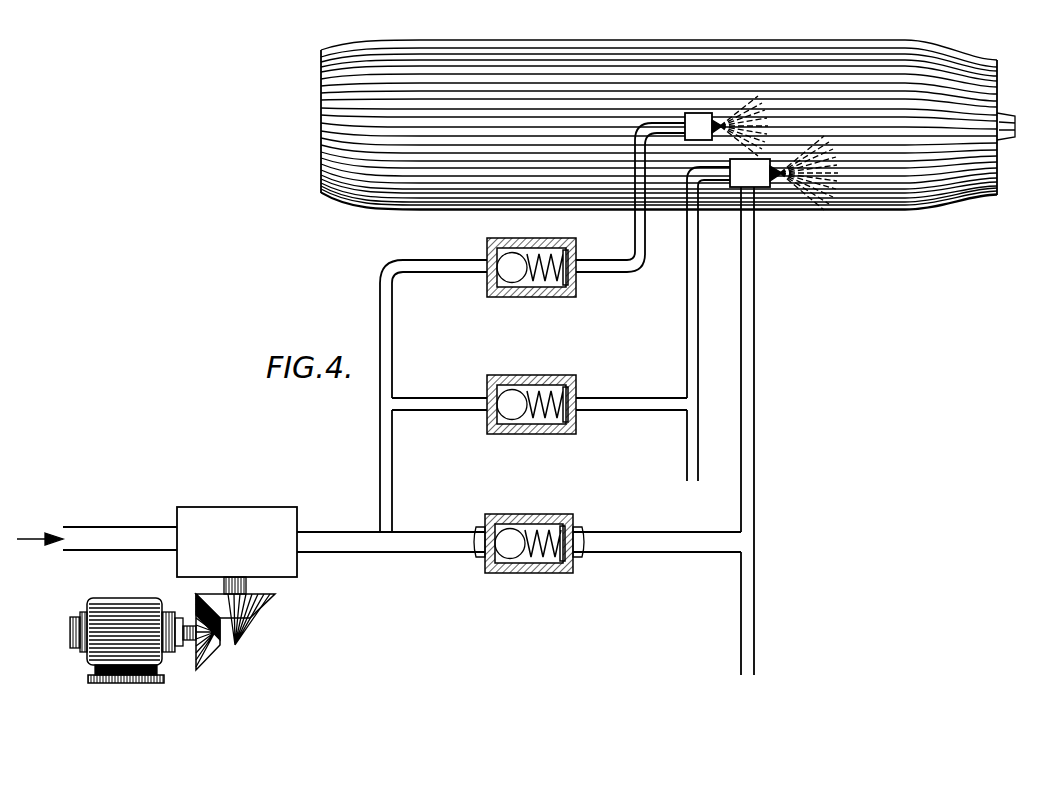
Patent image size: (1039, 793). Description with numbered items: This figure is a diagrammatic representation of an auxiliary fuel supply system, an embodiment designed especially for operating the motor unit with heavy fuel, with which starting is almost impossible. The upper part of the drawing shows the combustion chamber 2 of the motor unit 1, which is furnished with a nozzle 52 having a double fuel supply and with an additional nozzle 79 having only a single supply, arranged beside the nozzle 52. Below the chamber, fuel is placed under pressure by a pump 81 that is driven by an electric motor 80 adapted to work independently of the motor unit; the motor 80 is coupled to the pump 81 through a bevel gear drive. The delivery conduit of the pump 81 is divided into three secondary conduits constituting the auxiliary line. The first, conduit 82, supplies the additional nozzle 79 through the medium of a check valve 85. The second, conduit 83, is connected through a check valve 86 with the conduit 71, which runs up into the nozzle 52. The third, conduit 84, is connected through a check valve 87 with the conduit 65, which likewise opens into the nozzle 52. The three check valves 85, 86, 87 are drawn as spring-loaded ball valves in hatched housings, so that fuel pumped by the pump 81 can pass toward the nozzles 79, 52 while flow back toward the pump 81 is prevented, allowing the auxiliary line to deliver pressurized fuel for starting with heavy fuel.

The tank 1 is at (466, 56).
The combustion chamber 2 is at (872, 88).
The additional nozzle 79 is at (694, 113).
The nozzle 52 is at (770, 159).
The conduit 82 is at (446, 262).
The conduit 83 is at (442, 398).
The conduit 84 is at (435, 532).
The check valve 85 is at (535, 240).
The check valve 86 is at (537, 377).
The check valve 87 is at (540, 514).
The conduit 71 is at (698, 300).
The conduit 65 is at (755, 425).
The pump 81 is at (238, 507).
The electric motor 80 is at (135, 598).